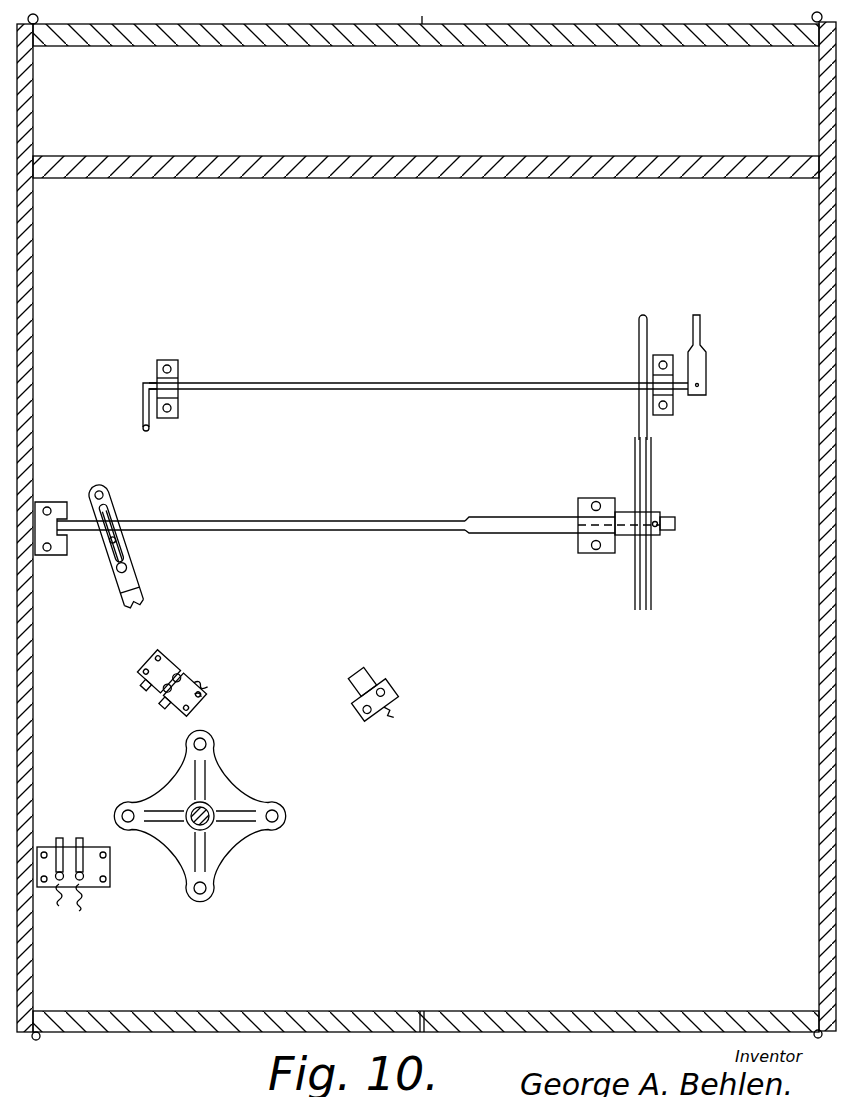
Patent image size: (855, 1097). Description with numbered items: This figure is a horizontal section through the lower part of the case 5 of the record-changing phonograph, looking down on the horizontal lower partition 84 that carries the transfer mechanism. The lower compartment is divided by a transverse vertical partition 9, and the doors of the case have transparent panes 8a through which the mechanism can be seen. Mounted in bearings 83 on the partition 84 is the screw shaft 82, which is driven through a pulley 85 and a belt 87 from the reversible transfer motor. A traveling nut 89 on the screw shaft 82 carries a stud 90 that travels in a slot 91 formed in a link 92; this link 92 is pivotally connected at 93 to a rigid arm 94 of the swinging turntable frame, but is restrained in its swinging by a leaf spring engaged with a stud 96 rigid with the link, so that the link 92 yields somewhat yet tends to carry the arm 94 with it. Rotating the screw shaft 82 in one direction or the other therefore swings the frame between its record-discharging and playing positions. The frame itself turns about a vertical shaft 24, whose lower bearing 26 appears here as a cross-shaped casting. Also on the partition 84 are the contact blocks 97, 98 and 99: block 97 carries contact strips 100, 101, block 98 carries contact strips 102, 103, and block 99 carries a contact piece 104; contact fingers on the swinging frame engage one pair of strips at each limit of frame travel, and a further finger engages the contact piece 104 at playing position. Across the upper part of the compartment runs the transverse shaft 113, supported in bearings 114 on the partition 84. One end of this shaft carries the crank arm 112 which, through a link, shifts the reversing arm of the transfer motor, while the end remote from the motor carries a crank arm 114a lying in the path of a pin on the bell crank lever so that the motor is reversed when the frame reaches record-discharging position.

The case 5 is at (28, 707).
The transverse vertical partition 9 is at (360, 162).
The transparent panes 8a is at (622, 1001).
The transverse shaft 113 is at (493, 383).
The bearings 114 is at (183, 393).
The crank arm 114a is at (143, 409).
The crank arm 112 is at (699, 338).
The belt 87 is at (654, 428).
The pulley 85 is at (655, 597).
The screw shaft 82 is at (358, 512).
The bearings 83 is at (55, 515).
The horizontal lower partition 84 is at (645, 618).
The traveling nut 89 is at (112, 550).
The stud 96 is at (104, 494).
The stud 90 is at (103, 530).
The slot 91 is at (108, 555).
The link 92 is at (127, 548).
The pivot 93 is at (127, 569).
The rigid arm 94 is at (138, 598).
The contact block 98 is at (161, 704).
The contact strip 102 is at (152, 691).
The contact strip 103 is at (168, 703).
The contact block 99 is at (388, 681).
The contact piece 104 is at (369, 676).
The lower bearing 26 is at (201, 815).
The vertical shaft 24 is at (210, 826).
The contact block 97 is at (76, 854).
The contact strip 100 is at (58, 838).
The contact strip 101 is at (79, 838).